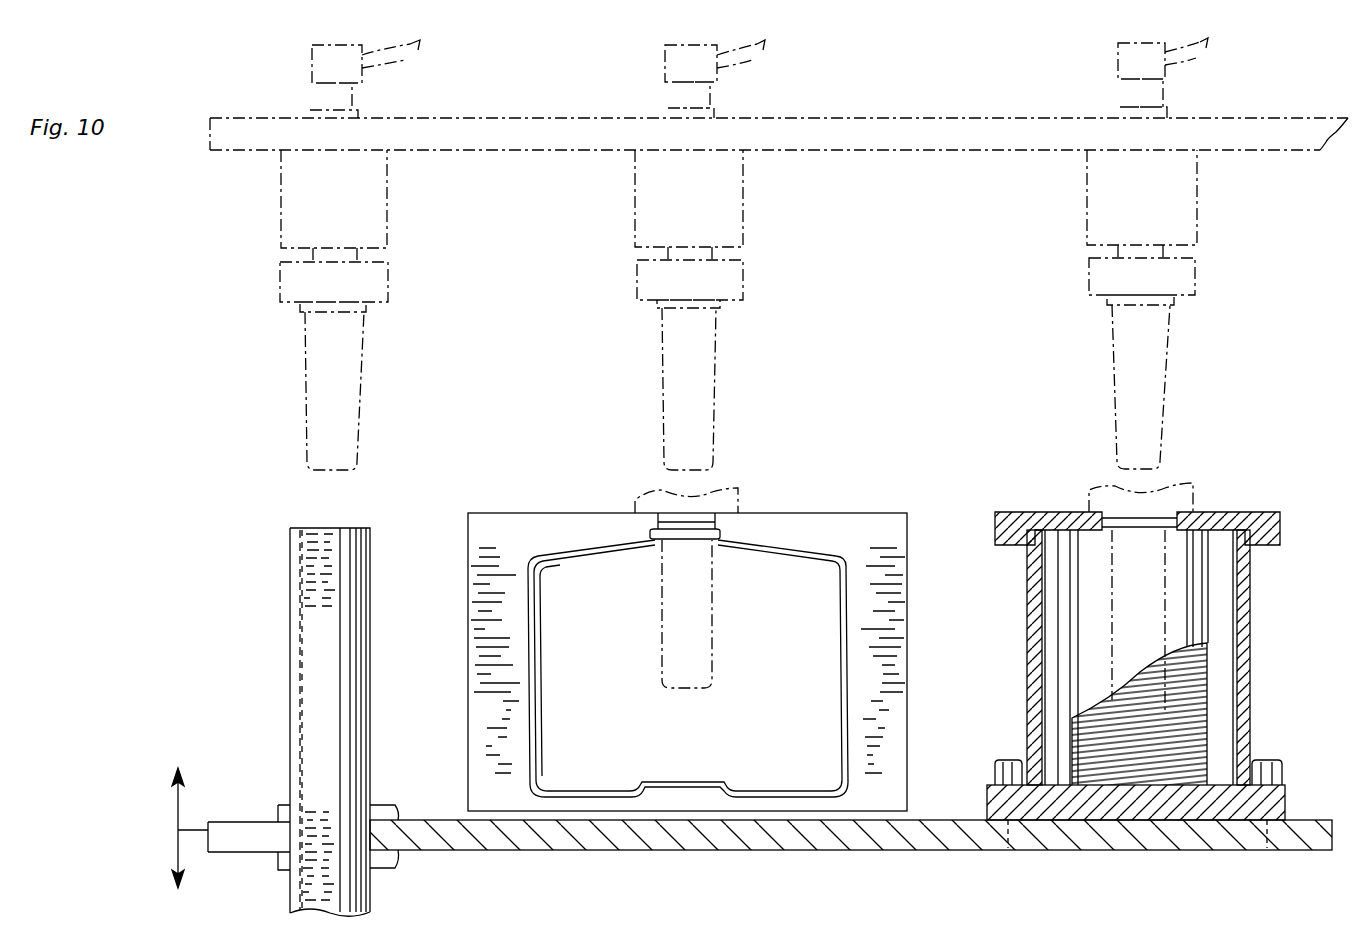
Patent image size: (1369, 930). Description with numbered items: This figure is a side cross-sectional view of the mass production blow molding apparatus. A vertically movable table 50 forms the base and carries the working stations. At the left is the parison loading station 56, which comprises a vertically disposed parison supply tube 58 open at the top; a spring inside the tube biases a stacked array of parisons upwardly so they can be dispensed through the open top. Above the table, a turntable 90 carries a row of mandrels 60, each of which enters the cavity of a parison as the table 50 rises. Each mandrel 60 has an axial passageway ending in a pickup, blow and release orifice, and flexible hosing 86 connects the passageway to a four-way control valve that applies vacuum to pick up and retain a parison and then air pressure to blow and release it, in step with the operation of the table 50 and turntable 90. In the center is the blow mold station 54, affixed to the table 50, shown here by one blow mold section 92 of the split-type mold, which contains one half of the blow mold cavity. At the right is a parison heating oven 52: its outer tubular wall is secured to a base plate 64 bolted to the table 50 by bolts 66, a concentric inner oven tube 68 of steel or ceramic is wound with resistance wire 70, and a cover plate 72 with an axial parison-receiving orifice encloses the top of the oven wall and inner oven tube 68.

The vertically movable table 50 is at (885, 850).
The parison heating oven 52 is at (1266, 594).
The blow mold station 54 is at (794, 494).
The parison loading station 56 is at (276, 585).
The parison supply tube 58 is at (290, 660).
The mandrel 60 is at (305, 360).
The base plate 64 is at (1284, 786).
The bolt 66 is at (1267, 760).
The inner oven tube 68 is at (1207, 623).
The resistance wire 70 is at (1208, 678).
The cover plate 72 is at (1240, 512).
The flexible hosing 86 is at (418, 52).
The turntable 90 is at (248, 150).
The blow mold section 92 is at (876, 522).